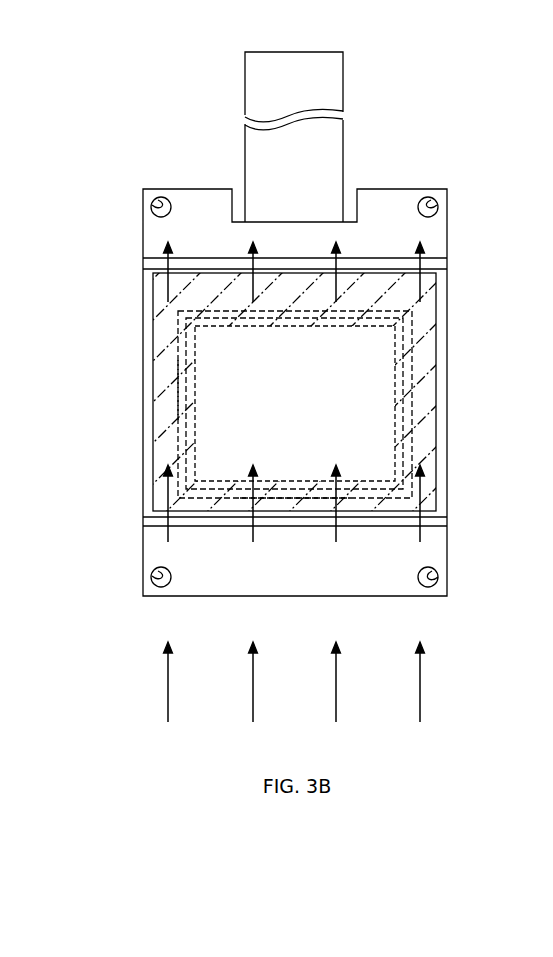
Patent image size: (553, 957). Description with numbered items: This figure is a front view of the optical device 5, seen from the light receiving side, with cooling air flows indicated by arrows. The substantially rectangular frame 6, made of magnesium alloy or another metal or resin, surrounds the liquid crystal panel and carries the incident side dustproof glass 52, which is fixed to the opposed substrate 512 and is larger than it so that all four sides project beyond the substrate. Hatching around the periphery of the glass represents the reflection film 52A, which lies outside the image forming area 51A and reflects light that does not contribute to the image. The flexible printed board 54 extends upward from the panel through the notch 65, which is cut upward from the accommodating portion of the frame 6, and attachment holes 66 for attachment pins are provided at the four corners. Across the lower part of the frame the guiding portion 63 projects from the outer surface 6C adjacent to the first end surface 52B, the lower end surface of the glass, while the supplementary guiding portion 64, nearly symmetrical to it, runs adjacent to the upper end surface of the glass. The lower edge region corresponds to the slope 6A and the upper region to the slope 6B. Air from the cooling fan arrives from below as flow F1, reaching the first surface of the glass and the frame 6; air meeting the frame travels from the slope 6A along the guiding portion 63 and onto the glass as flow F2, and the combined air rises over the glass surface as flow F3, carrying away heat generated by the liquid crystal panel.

The optical device 5 is at (466, 125).
The flexible printed board 54 is at (335, 74).
The frame 6 is at (438, 236).
The slope 6A is at (300, 600).
The slope 6B is at (203, 205).
The outer surface 6C is at (147, 300).
The notch 65 is at (357, 205).
The attachment holes 66 is at (152, 205).
The supplementary guiding portion 64 is at (445, 262).
The guiding portion 63 is at (440, 520).
The incident side dustproof glass 52 is at (437, 342).
The reflection film 52A is at (180, 387).
The first end surface 52B is at (295, 513).
The opposed substrate 512 is at (420, 392).
The image forming area 51A is at (195, 418).
The flow F1 is at (253, 682).
The flow F2 is at (168, 535).
The flow F3 is at (245, 257).